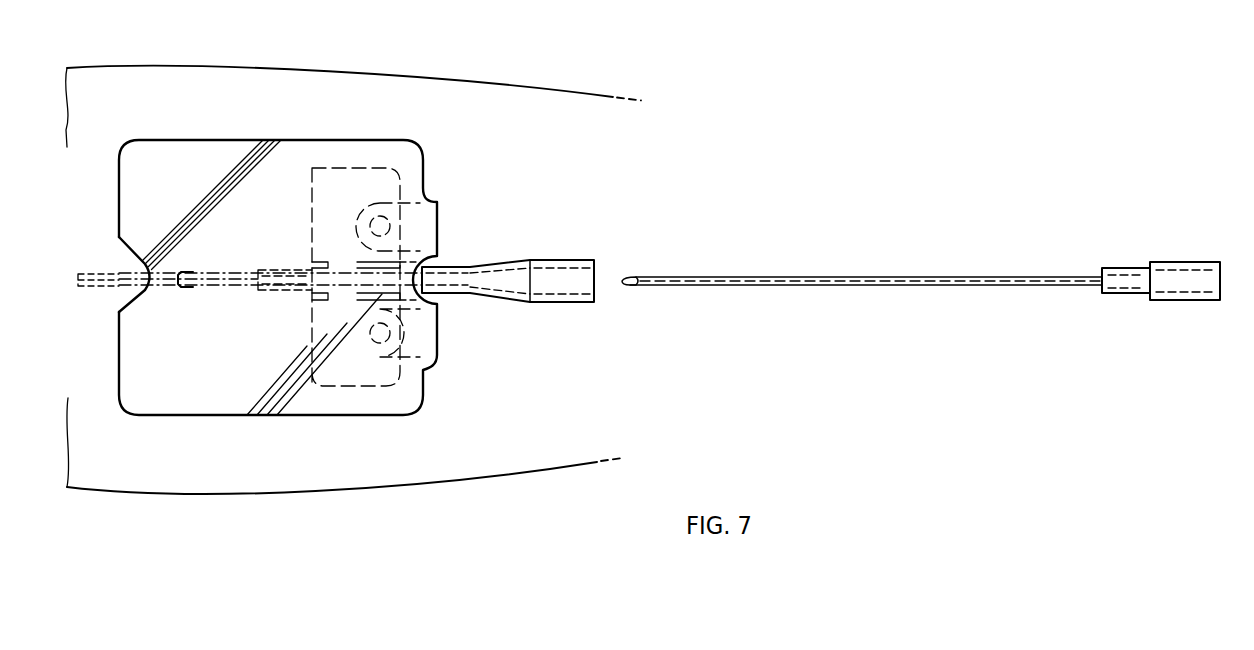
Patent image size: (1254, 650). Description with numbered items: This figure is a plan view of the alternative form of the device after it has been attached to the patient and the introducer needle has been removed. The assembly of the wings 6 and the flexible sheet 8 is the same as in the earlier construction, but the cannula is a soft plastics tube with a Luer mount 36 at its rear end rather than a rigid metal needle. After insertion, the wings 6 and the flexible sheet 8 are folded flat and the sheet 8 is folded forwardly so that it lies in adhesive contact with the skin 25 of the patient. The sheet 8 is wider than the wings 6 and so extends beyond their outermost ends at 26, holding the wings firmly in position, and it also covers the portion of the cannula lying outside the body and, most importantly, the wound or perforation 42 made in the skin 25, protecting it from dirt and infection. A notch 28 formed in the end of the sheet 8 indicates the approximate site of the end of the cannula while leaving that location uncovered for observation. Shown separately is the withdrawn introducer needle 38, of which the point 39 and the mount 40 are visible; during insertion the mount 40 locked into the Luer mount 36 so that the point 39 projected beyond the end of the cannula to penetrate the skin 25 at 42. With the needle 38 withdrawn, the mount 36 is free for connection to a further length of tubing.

The skin 25 is at (347, 72).
The outermost ends of the wings 26 is at (327, 143).
The wings 6 is at (320, 195).
The flexible sheet 8 is at (194, 411).
The notch 28 is at (136, 312).
The perforation 42 is at (192, 289).
The Luer mount 36 is at (570, 296).
The introducer needle 38 is at (842, 288).
The point 39 is at (632, 284).
The mount 40 is at (1192, 294).